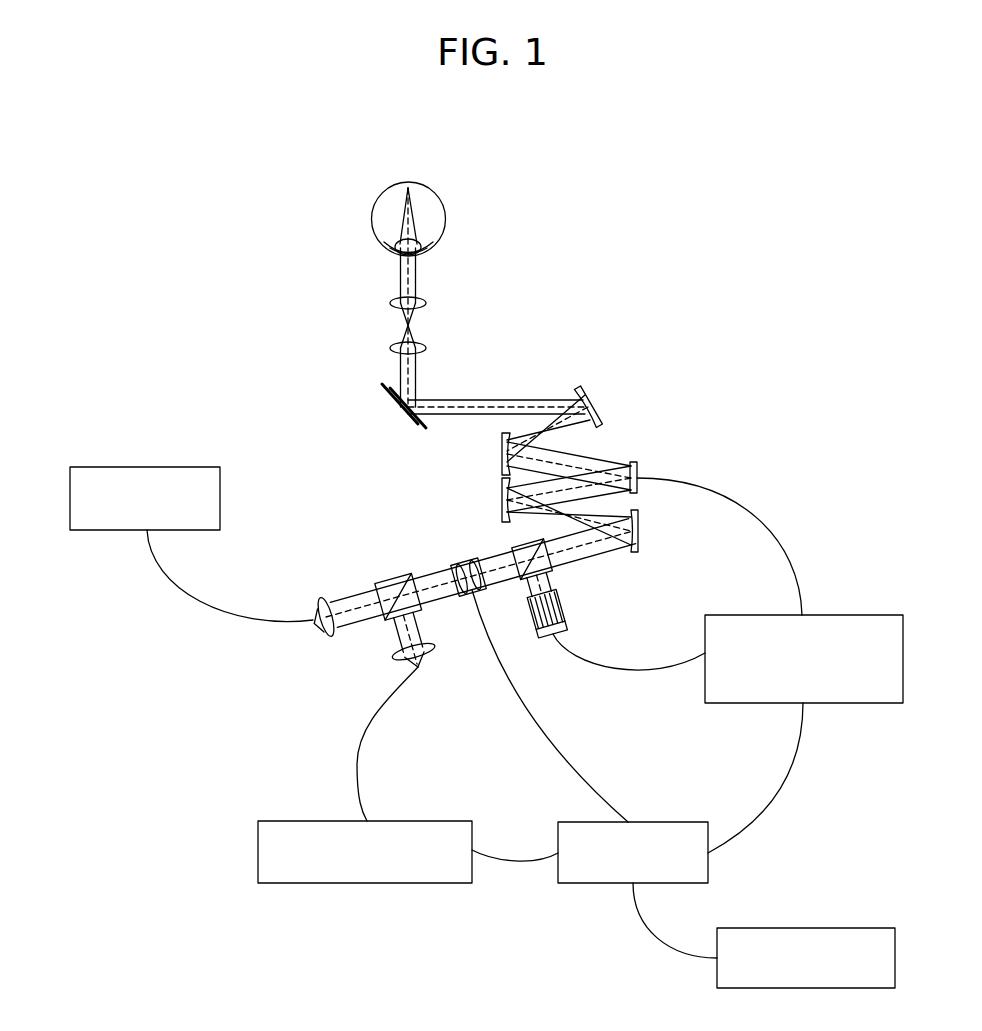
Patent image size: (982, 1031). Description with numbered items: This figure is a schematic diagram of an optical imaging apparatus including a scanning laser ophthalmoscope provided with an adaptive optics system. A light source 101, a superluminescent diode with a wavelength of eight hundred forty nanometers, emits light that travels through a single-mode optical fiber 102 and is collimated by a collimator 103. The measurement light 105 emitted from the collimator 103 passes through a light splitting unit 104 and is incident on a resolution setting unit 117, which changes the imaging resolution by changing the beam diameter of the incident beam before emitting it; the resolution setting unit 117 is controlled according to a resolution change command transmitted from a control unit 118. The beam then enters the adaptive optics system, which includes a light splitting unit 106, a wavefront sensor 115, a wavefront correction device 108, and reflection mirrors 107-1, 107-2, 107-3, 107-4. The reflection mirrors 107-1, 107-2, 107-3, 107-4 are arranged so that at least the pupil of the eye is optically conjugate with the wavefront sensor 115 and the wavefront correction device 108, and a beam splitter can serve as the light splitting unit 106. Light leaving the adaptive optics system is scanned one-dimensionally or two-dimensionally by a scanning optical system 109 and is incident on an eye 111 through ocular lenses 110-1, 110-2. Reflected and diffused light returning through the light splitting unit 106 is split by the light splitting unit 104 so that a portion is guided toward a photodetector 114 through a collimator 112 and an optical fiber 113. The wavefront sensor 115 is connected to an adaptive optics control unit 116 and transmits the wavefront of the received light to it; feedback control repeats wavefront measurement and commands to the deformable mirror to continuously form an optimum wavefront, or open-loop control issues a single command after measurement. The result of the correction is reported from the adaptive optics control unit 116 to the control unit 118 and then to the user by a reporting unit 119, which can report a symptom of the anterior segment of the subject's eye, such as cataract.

The light source 101 is at (160, 467).
The single-mode optical fiber 102 is at (180, 592).
The collimator 103 is at (323, 633).
The light splitting unit 104 is at (383, 576).
The measurement light 105 is at (447, 572).
The light splitting unit 106 is at (555, 570).
The reflection mirror 107-1 is at (639, 546).
The reflection mirror 107-2 is at (503, 503).
The reflection mirror 107-3 is at (503, 456).
The reflection mirror 107-4 is at (598, 412).
The wavefront correction device 108 is at (638, 461).
The scanning optical system 109 is at (406, 413).
The ocular lens 110-1 is at (428, 350).
The ocular lens 110-2 is at (428, 303).
The eye 111 is at (429, 189).
The collimator 112 is at (400, 656).
The optical fiber 113 is at (357, 750).
The photodetector 114 is at (403, 821).
The wavefront sensor 115 is at (562, 618).
The adaptive optics control unit 116 is at (830, 615).
The resolution setting unit 117 is at (459, 595).
The control unit 118 is at (673, 822).
The reporting unit 119 is at (823, 928).